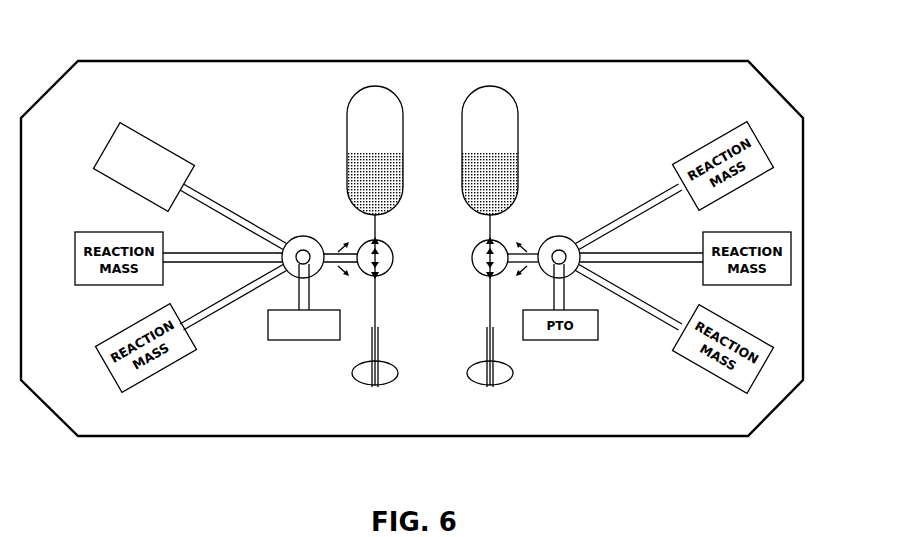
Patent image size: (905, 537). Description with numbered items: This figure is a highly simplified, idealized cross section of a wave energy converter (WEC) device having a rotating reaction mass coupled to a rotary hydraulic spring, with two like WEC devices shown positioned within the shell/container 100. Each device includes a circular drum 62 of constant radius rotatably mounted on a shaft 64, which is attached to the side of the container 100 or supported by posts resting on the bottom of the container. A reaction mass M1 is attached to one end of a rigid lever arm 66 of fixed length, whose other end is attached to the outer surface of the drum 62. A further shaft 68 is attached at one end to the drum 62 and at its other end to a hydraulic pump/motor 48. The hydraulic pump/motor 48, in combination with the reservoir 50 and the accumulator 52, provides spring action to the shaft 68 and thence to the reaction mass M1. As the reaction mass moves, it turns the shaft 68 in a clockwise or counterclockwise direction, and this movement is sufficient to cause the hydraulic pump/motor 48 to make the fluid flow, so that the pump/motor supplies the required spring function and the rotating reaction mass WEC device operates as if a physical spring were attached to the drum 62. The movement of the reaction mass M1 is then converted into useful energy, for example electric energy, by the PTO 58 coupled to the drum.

The shell/container 100 is at (566, 61).
The reaction mass M1 is at (162, 145).
The rigid lever arm 66 is at (226, 253).
The circular drum 62 is at (312, 244).
The shaft 64 is at (302, 236).
The shaft 68 is at (333, 246).
The hydraulic pump/motor 48 is at (393, 256).
The accumulator 52 is at (380, 106).
The PTO 58 is at (298, 342).
The reservoir 50 is at (362, 372).